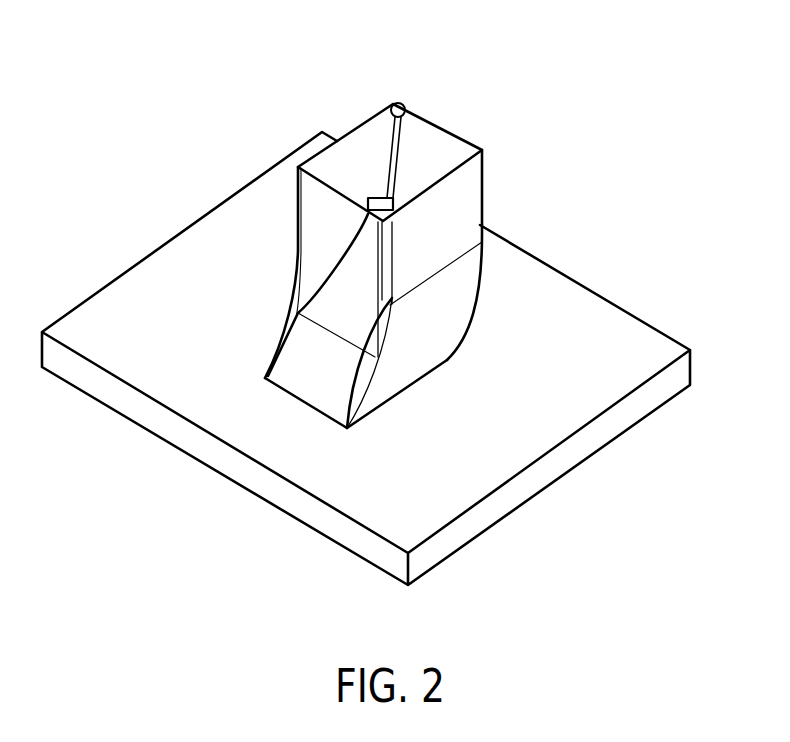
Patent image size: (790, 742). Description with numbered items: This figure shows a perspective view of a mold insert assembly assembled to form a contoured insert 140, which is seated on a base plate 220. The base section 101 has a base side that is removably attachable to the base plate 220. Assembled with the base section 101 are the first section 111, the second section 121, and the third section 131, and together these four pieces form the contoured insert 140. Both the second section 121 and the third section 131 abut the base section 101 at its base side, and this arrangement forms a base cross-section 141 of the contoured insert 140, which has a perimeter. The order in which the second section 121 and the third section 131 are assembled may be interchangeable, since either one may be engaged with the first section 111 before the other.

The base section 101 is at (307, 383).
The first section 111 is at (403, 105).
The second section 121 is at (475, 195).
The third section 131 is at (353, 137).
The base cross-section 141 is at (278, 390).
The contoured insert 140 is at (507, 108).
The base plate 220 is at (628, 328).